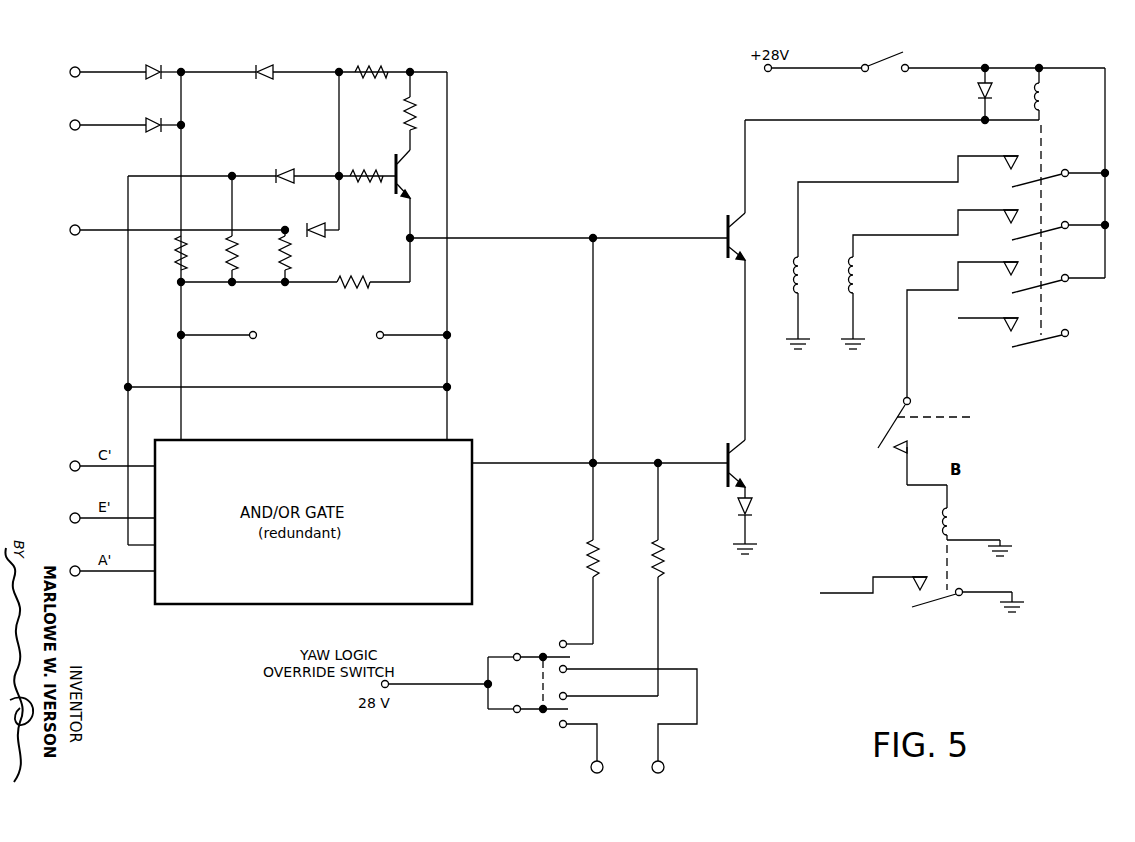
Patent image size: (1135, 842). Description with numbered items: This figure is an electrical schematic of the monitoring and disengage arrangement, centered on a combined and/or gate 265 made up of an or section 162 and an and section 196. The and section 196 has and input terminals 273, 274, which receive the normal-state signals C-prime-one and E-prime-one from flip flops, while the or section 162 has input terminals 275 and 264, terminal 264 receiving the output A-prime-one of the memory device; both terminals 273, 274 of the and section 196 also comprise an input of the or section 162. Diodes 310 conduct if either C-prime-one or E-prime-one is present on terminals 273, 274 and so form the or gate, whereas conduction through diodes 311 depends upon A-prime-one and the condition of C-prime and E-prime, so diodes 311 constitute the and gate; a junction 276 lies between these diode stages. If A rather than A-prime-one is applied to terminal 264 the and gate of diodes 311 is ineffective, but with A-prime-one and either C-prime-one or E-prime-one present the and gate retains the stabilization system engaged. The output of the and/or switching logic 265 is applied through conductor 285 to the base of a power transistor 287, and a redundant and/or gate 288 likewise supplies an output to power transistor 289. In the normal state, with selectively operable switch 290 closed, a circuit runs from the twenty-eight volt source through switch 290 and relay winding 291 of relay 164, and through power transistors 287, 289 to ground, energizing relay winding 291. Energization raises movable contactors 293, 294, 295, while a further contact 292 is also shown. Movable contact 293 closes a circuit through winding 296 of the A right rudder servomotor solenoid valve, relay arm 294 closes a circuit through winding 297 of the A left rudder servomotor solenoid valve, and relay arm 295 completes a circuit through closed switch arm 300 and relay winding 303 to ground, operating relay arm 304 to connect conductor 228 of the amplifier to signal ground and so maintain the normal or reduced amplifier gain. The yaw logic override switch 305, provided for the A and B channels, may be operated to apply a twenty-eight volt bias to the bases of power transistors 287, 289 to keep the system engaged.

The or section 162 is at (313, 136).
The relay 164 is at (1080, 104).
The and section 196 is at (90, 104).
The conductor 228 is at (845, 590).
The terminal 264 is at (70, 226).
The combined and/or gate 265 is at (322, 41).
The and input terminal 273 is at (72, 66).
The and input terminal 274 is at (72, 131).
The or section input terminal 275 is at (183, 75).
The junction diode 276 is at (232, 173).
The conductor 285 is at (558, 235).
The power transistor 287 is at (718, 218).
The and/or gate 288 is at (478, 447).
The power transistor 289 is at (718, 444).
The selectively operable switch 290 is at (890, 58).
The relay winding 291 is at (1043, 107).
The relay contact 292 is at (1045, 340).
The movable contact 293 is at (1065, 178).
The relay arm 294 is at (1065, 230).
The relay arm 295 is at (1065, 283).
The winding 296 is at (797, 266).
The winding 297 is at (852, 266).
The switch arm 300 is at (889, 431).
The relay winding 303 is at (941, 523).
The relay arm 304 is at (930, 605).
The yaw logic override switch 305 is at (472, 666).
The diodes 310 is at (263, 65).
The diodes 311 is at (318, 222).